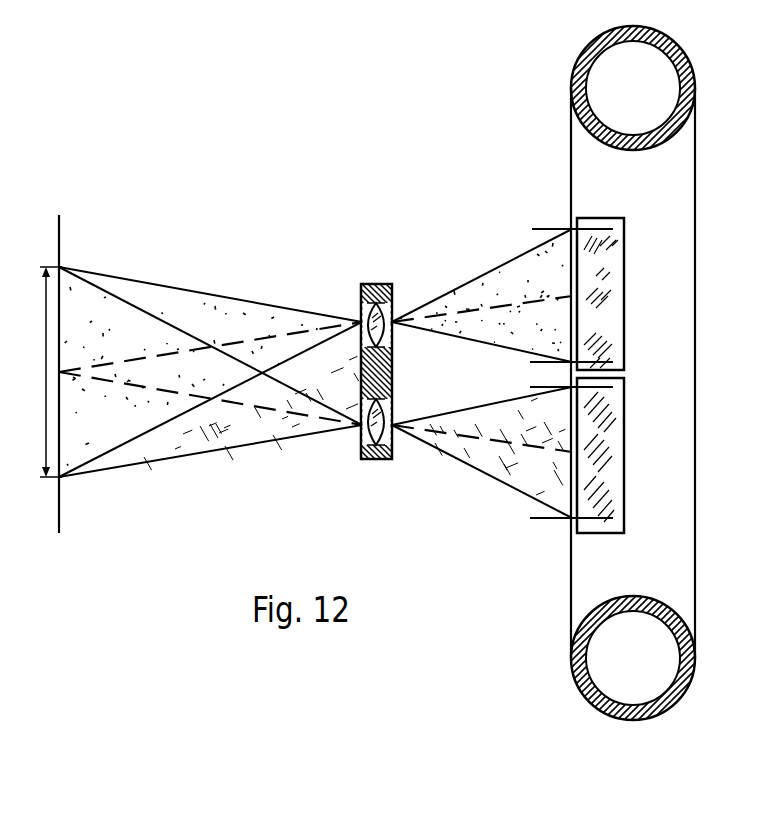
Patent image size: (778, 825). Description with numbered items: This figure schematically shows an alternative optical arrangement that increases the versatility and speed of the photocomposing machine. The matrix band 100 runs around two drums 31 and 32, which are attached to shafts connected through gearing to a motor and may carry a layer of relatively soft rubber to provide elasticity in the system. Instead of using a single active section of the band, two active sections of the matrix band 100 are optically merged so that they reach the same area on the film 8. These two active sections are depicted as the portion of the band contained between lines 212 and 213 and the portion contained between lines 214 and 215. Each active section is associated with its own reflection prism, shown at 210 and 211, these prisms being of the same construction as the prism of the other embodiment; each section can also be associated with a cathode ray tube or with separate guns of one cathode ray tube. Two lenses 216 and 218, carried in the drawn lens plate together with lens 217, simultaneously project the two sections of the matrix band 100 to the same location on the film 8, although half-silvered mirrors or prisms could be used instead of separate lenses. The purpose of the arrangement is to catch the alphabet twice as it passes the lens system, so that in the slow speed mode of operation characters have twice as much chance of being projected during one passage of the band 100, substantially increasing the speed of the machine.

The film 8 is at (60, 502).
The drum 31 is at (598, 47).
The drum 32 is at (590, 679).
The matrix band 100 is at (695, 202).
The reflection prism 210 is at (618, 308).
The reflection prism 211 is at (618, 443).
The line 212 is at (572, 219).
The line 213 is at (555, 363).
The line 214 is at (555, 385).
The line 215 is at (571, 529).
The lens 216 is at (366, 311).
The second lens 217 is at (393, 419).
The lens 218 is at (377, 461).